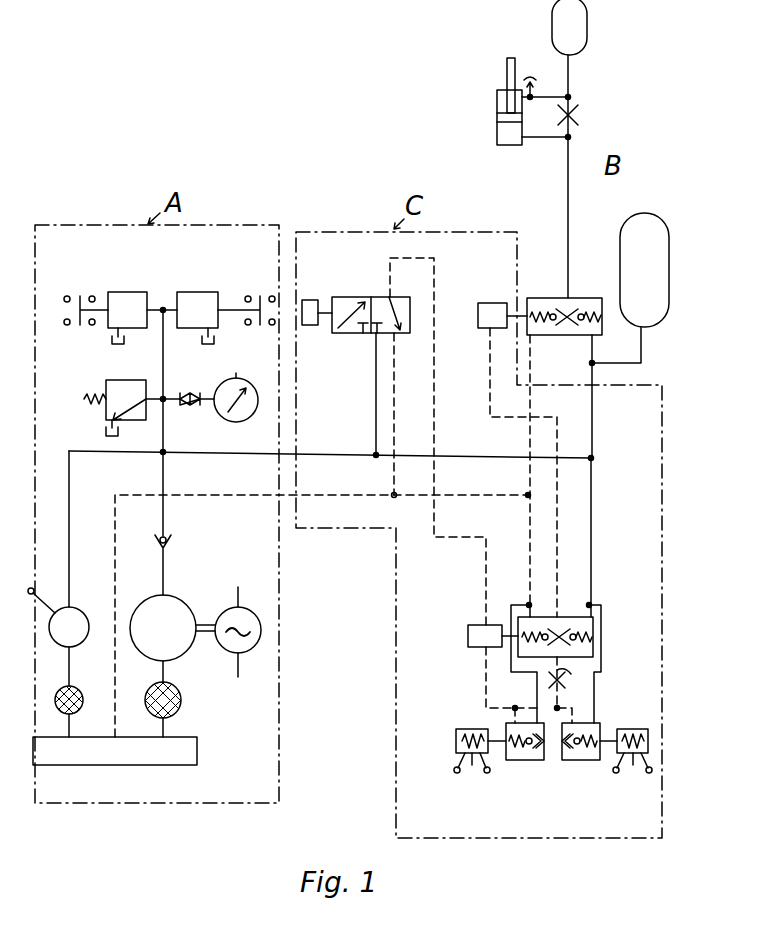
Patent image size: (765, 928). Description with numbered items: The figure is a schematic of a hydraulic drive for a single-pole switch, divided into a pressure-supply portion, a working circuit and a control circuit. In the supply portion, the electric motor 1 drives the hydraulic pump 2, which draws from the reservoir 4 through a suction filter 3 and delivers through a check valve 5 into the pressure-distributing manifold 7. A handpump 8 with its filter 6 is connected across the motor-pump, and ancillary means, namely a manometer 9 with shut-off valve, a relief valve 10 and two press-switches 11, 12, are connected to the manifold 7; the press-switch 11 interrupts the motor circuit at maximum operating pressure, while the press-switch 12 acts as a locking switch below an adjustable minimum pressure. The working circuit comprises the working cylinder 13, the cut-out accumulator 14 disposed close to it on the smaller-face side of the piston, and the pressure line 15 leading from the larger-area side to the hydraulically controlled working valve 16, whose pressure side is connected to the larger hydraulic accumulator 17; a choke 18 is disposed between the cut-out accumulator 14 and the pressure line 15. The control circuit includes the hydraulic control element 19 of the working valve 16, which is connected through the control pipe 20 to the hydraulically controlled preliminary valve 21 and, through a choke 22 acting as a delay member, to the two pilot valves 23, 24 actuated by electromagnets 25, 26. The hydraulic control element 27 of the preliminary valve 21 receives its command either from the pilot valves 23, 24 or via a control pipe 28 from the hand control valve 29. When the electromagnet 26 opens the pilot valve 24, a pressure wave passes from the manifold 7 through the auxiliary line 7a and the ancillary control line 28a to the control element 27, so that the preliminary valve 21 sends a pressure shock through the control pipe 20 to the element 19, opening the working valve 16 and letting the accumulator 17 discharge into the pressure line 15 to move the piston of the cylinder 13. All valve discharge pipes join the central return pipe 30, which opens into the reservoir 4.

The electric motor 1 is at (240, 612).
The hydraulic pump 2 is at (174, 608).
The suction filter 3 is at (177, 697).
The reservoir 4 is at (158, 760).
The check valve 5 is at (171, 523).
The filter 6 is at (56, 692).
The pressure-distributing manifold 7 is at (341, 453).
The auxiliary line 7a is at (590, 579).
The handpump 8 is at (60, 607).
The manometer 9 is at (219, 388).
The relief valve 10 is at (145, 382).
The press-switch 11 is at (110, 285).
The press-switch 12 is at (228, 285).
The working cylinder 13 is at (497, 128).
The cut-out accumulator 14 is at (581, 42).
The pressure line 15 is at (567, 188).
The working valve 16 is at (572, 298).
The hydraulic accumulator 17 is at (657, 294).
The choke 18 is at (590, 108).
The hydraulic control element 19 is at (480, 326).
The control pipe 20 is at (554, 581).
The preliminary valve 21 is at (592, 648).
The choke 22 is at (569, 685).
The pilot valve 23 is at (518, 762).
The pilot valve 24 is at (582, 762).
The electromagnet 25 is at (480, 765).
The electromagnet 26 is at (632, 765).
The hydraulic control element 27 is at (468, 640).
The control pipe 28 is at (485, 564).
The ancillary control line 28a is at (482, 704).
The hand control valve 29 is at (340, 297).
The central return pipe 30 is at (350, 493).